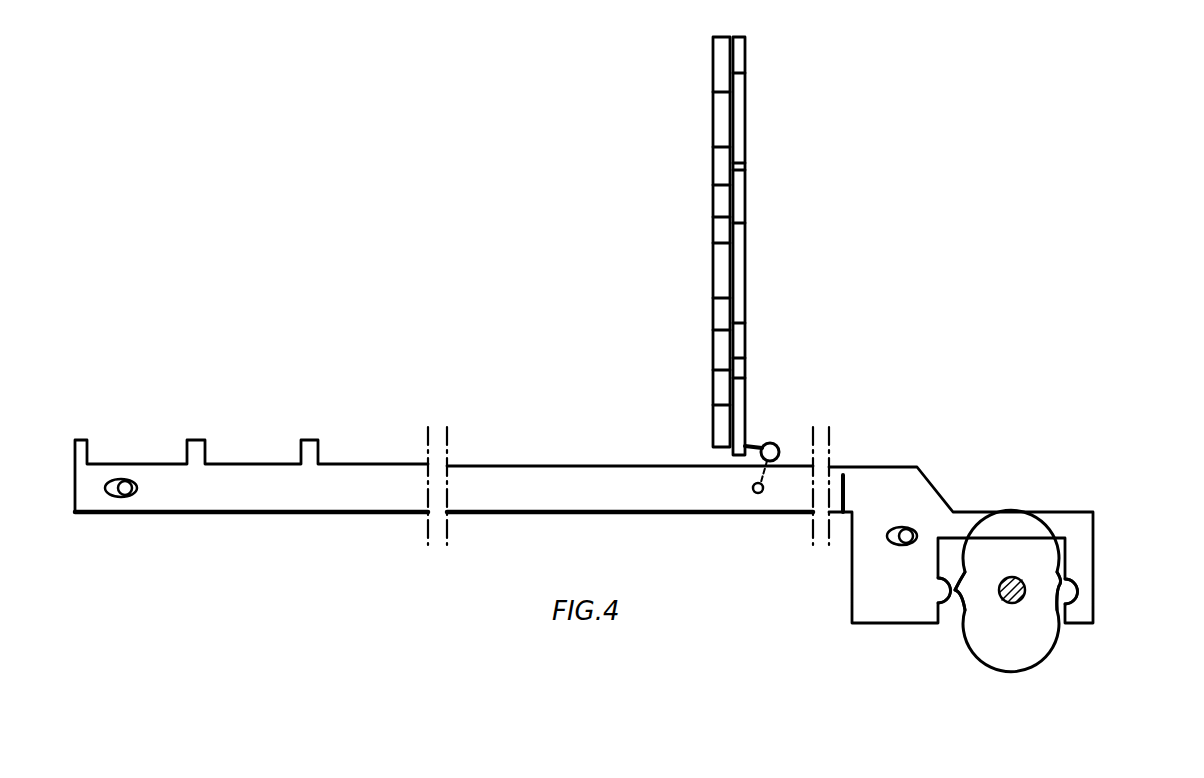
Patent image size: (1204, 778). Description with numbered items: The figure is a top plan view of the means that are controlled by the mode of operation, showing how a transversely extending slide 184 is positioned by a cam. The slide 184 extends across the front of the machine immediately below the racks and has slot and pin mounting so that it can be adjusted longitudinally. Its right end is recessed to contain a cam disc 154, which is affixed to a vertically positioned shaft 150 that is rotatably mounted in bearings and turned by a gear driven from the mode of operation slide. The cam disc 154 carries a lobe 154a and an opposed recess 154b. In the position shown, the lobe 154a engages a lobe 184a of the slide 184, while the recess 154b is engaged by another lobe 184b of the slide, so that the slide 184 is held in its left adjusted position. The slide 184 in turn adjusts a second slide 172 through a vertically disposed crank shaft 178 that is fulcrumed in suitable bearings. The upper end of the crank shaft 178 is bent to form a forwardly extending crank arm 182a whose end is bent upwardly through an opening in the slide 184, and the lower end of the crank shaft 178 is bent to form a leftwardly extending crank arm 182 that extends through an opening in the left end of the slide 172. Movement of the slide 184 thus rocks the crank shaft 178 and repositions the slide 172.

The shaft 150 is at (1010, 580).
The cam disc 154 is at (1022, 562).
The lobe 154a is at (958, 594).
The recess 154b is at (1060, 579).
The slide 172 is at (735, 415).
The crank shaft 178 is at (777, 442).
The crank arm 182 is at (757, 446).
The crank arm 182a is at (758, 465).
The slide 184 is at (547, 493).
The lobe 184a is at (942, 588).
The lobe 184b is at (1060, 590).